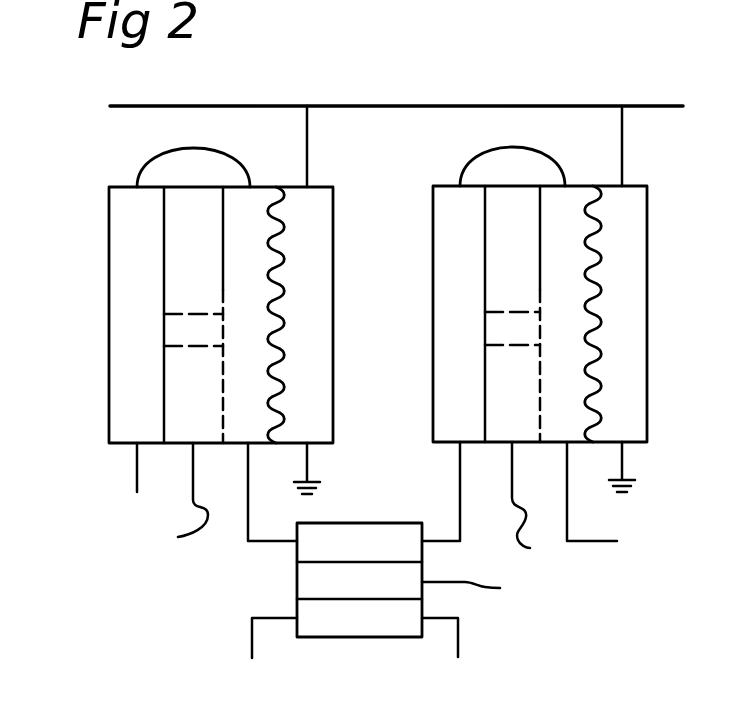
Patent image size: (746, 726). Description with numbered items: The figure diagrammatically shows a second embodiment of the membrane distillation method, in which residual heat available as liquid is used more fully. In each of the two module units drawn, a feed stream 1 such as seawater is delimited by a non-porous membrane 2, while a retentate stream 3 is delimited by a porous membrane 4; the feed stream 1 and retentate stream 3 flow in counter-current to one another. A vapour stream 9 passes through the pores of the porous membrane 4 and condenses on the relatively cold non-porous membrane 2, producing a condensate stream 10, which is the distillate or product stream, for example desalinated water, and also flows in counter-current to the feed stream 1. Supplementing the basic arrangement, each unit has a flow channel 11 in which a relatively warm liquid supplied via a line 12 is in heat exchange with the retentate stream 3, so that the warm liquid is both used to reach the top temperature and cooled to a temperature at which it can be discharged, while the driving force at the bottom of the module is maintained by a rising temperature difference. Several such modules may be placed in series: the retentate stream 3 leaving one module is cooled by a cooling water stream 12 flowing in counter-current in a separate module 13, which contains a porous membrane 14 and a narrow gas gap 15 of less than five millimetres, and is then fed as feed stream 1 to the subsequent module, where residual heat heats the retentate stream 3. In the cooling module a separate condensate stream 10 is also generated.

The feed stream 1 is at (137, 478).
The non-porous membrane 2 is at (164, 292).
The retentate stream 3 is at (248, 473).
The porous membrane 4 is at (223, 243).
The vapour stream 9 is at (208, 345).
The condensate stream 10 is at (349, 522).
The flow channel 11 is at (314, 367).
The line 12 is at (450, 104).
The separate module 13 is at (350, 644).
The porous membrane 14 is at (325, 562).
The gas gap 15 is at (322, 586).